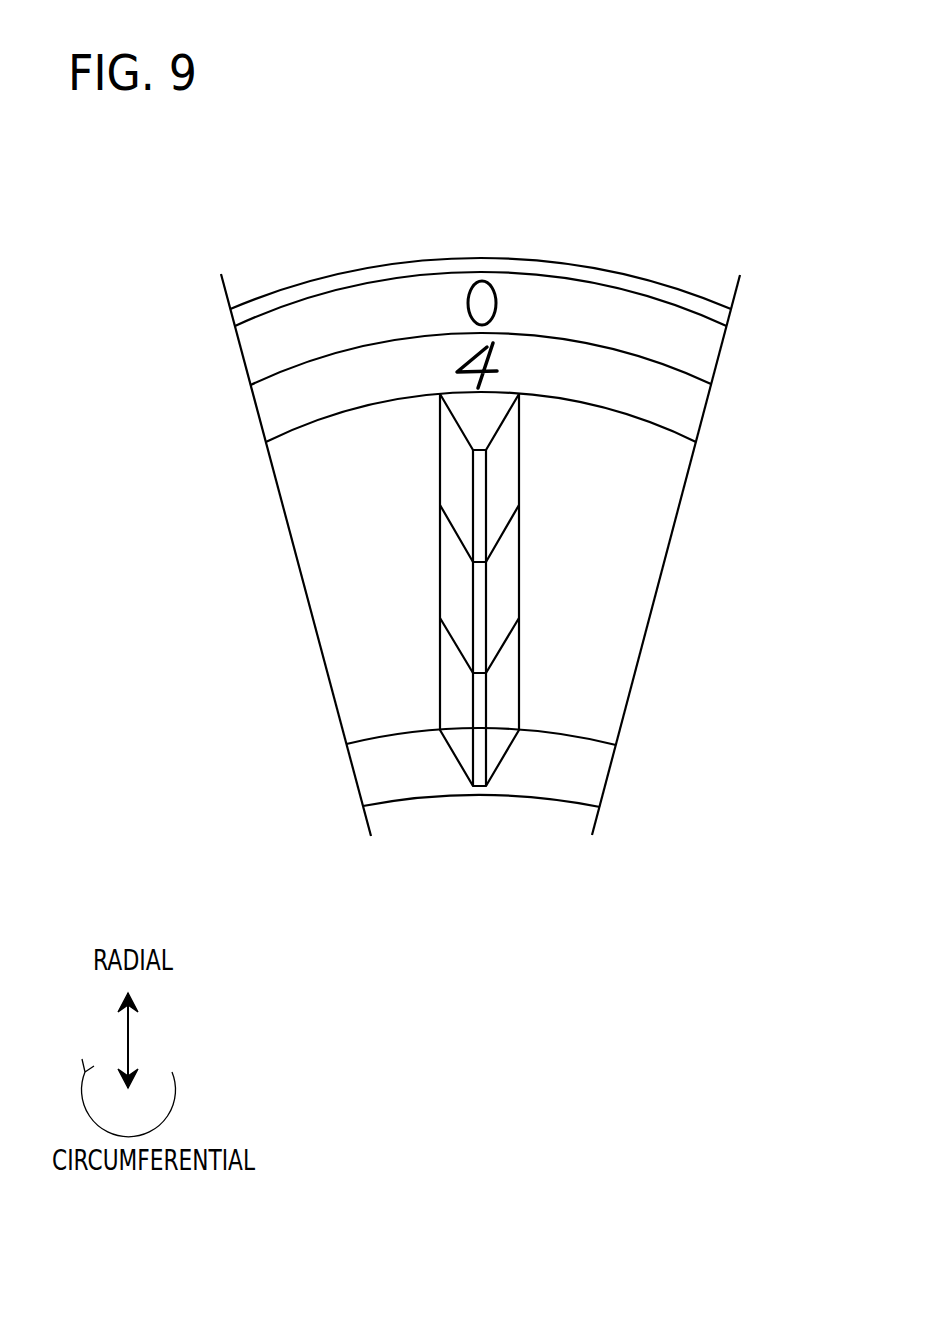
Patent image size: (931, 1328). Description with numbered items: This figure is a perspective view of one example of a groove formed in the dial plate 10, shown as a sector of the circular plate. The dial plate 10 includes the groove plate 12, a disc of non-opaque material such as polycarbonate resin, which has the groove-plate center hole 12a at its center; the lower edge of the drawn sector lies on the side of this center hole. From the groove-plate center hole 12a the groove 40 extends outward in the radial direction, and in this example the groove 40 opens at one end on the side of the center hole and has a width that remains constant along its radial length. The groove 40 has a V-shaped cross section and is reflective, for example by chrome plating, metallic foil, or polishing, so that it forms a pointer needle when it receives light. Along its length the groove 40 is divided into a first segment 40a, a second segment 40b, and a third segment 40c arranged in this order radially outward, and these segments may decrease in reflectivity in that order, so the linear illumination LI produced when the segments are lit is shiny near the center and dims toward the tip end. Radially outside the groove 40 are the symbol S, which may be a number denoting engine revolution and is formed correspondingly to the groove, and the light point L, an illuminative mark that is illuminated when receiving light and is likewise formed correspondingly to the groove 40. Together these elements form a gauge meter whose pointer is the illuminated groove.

The dial plate 10 is at (812, 317).
The groove plate 12 is at (608, 720).
The groove-plate center hole 12a is at (545, 834).
The groove 40 is at (460, 590).
The first segment 40a is at (520, 677).
The second segment 40b is at (520, 568).
The third segment 40c is at (519, 470).
The linear illumination LI is at (402, 535).
The light point L is at (431, 313).
The symbol S is at (434, 374).